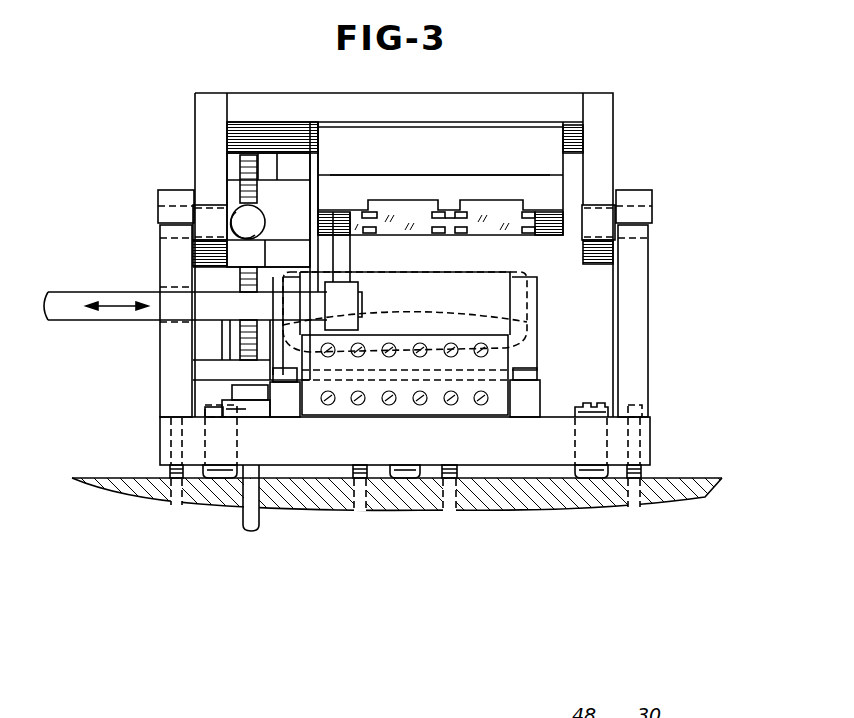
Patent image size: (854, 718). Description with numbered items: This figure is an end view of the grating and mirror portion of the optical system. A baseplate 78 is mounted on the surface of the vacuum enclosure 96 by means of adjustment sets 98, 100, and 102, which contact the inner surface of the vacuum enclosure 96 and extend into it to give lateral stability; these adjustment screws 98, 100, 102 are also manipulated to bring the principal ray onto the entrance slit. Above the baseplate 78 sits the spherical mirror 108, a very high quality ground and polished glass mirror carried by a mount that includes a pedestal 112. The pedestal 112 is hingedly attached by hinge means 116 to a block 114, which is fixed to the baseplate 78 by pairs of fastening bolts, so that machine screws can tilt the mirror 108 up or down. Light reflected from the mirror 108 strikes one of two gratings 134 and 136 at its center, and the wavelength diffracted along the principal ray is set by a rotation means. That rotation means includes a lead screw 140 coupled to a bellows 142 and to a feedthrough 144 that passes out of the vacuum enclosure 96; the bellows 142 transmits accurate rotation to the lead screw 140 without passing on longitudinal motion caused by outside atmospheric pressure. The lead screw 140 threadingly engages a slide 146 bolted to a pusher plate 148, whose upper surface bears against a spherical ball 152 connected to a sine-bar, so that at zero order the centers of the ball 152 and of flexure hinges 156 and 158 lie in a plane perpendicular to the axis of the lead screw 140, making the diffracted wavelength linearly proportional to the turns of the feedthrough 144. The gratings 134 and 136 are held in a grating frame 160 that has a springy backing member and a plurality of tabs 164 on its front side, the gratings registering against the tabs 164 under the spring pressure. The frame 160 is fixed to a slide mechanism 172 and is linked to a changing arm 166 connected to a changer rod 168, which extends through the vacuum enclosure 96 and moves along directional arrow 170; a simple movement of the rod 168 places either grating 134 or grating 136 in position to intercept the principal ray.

The baseplate 78 is at (648, 453).
The vacuum enclosure 96 is at (663, 486).
The adjustment set 98 is at (408, 480).
The adjustment set 100 is at (612, 400).
The adjustment set 102 is at (216, 480).
The spherical mirror 108 is at (533, 311).
The pedestal 112 is at (533, 351).
The block 114 is at (536, 392).
The hinge means 116 is at (318, 412).
The grating 134 is at (523, 202).
The grating 136 is at (388, 217).
The lead screw 140 is at (238, 335).
The bellows 142 is at (237, 392).
The feedthrough 144 is at (260, 520).
The slide 146 is at (196, 132).
The pusher plate 148 is at (248, 252).
The spherical ball 152 is at (252, 230).
The flexure hinge 156 is at (162, 222).
The flexure hinge 158 is at (652, 224).
The grating frame 160 is at (478, 182).
The tabs 164 is at (452, 205).
The changing arm 166 is at (346, 256).
The changer rod 168 is at (70, 292).
The directional arrow 170 is at (112, 302).
The slide mechanism 172 is at (292, 128).